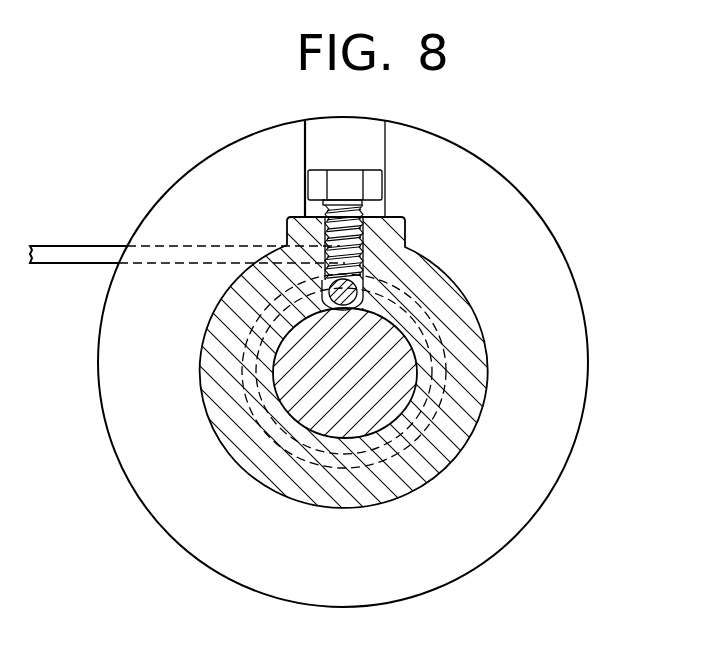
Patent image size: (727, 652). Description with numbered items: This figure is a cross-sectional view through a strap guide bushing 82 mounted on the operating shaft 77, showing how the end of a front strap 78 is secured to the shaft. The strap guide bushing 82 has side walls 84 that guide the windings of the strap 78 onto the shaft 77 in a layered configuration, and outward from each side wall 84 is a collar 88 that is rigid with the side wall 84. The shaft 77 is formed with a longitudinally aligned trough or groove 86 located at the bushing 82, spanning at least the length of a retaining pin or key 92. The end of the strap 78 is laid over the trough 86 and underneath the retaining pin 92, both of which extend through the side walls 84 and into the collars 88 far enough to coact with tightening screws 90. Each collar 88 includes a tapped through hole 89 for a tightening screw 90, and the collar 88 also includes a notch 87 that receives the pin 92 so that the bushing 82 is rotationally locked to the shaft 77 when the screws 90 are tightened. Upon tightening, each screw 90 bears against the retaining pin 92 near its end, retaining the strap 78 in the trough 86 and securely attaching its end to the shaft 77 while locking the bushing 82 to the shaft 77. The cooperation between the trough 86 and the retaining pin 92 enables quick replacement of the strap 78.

The shaft 77 is at (300, 418).
The front strap 78 is at (52, 264).
The strap guide bushing 82 is at (507, 172).
The side wall 84 is at (553, 283).
The trough 86 is at (410, 343).
The notch 87 is at (367, 293).
The collar 88 is at (430, 456).
The tapped through hole 89 is at (368, 247).
The tightening screw 90 is at (355, 185).
The retaining pin 92 is at (370, 272).